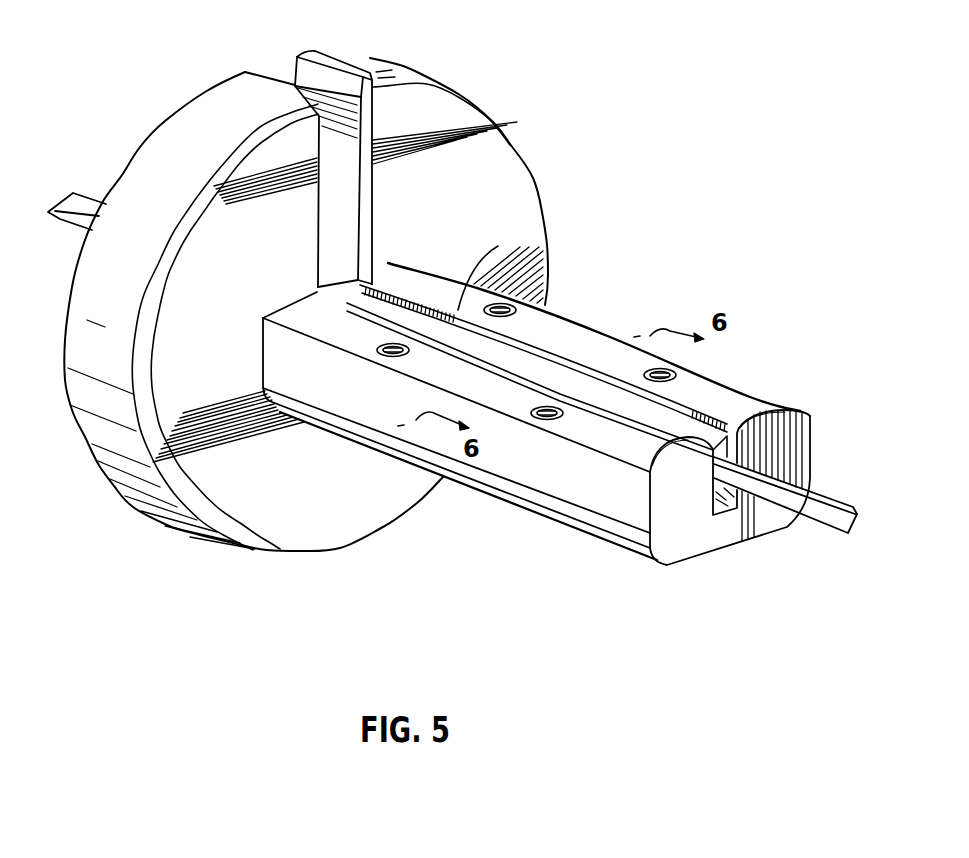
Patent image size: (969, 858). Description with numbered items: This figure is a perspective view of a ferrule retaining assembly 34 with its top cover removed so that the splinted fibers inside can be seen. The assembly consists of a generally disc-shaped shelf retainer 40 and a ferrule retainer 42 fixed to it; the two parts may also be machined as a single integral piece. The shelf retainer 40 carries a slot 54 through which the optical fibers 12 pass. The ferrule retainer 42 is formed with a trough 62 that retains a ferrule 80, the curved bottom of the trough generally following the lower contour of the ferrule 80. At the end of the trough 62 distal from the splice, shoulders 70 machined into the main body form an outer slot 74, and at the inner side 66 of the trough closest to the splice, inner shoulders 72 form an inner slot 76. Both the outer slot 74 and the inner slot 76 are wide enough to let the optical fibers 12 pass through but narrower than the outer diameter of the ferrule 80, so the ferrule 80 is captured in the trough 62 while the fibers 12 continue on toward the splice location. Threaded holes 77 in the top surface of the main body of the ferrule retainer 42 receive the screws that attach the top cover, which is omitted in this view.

The optical fibers 12 is at (92, 194).
The ferrule retaining assembly 34 is at (651, 240).
The shelf retainer 40 is at (107, 452).
The ferrule retainer 42 is at (550, 501).
The slot 54 is at (294, 80).
The trough 62 is at (500, 268).
The inner side 66 is at (670, 456).
The shoulders 70 is at (403, 290).
The inner shoulders 72 is at (729, 426).
The outer slot 74 is at (364, 285).
The inner slot 76 is at (742, 447).
The threaded holes 77 is at (408, 353).
The ferrule 80 is at (377, 315).